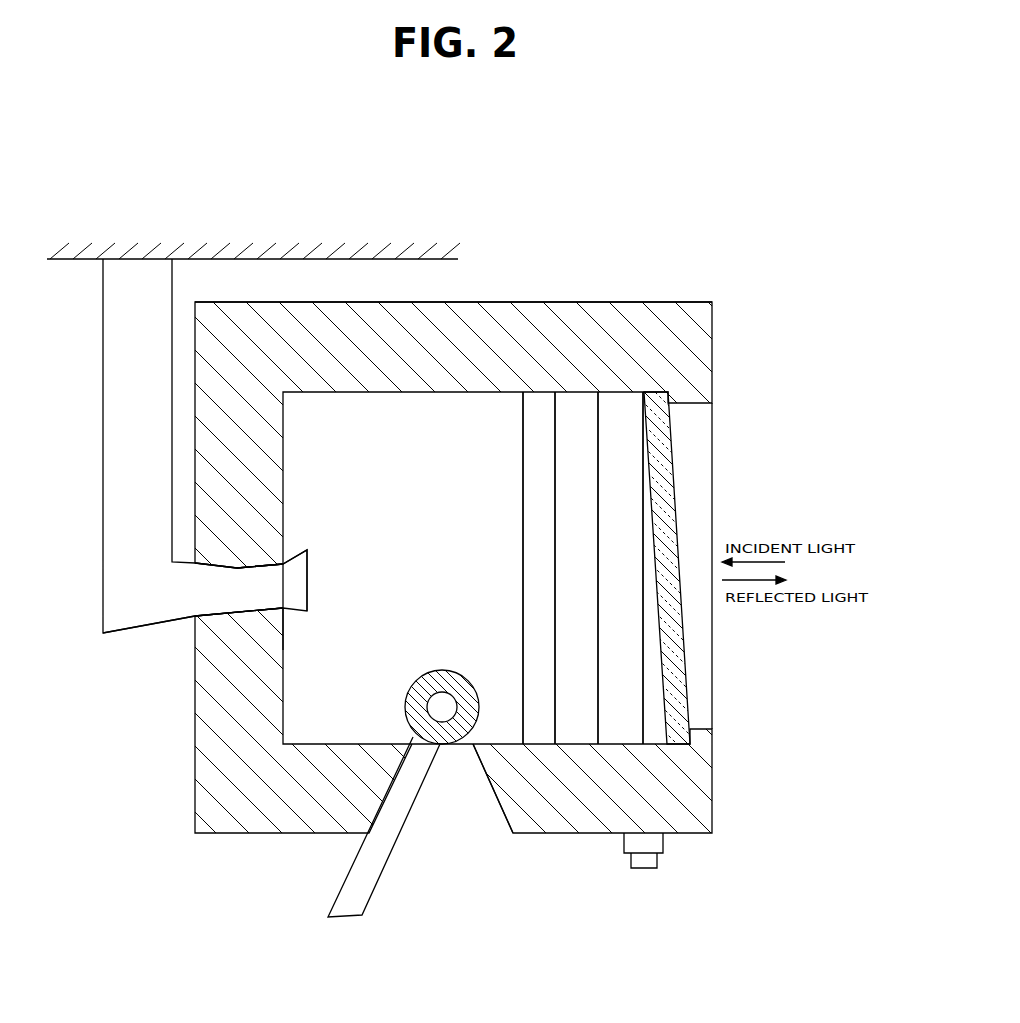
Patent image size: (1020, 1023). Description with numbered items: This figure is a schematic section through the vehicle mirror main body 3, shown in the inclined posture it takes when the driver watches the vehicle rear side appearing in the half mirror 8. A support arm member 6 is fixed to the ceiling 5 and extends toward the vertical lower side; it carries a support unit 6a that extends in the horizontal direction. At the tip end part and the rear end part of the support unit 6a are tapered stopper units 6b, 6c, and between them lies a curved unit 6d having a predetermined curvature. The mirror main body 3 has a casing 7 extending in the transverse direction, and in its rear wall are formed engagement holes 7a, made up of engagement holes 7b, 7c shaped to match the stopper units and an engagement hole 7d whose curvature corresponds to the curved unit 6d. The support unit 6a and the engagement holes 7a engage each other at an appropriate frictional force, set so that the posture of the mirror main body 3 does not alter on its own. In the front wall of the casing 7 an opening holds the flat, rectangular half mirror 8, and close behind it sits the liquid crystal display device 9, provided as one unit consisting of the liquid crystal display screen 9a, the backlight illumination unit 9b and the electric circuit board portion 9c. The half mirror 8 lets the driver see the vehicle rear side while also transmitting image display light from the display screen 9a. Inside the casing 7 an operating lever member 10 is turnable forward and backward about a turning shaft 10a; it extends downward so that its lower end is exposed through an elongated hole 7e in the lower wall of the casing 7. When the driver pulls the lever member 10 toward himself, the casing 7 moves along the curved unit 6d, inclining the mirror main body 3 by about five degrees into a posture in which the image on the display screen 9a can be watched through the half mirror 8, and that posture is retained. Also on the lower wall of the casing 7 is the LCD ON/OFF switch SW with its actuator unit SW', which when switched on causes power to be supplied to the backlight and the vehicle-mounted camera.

The vehicle mirror main body 3 is at (491, 294).
The ceiling 5 is at (241, 237).
The support arm member 6 is at (126, 391).
The support unit 6a is at (236, 566).
The stopper unit 6b is at (185, 615).
The stopper unit 6c is at (304, 549).
The curved unit 6d is at (240, 607).
The casing 7 is at (389, 366).
The engagement holes 7a is at (270, 563).
The engagement hole 7b is at (207, 610).
The engagement hole 7c is at (288, 612).
The engagement hole 7d is at (230, 570).
The elongated hole 7e is at (492, 826).
The half mirror 8 is at (665, 530).
The liquid crystal display device 9 is at (638, 246).
The liquid crystal display screen 9a is at (622, 408).
The backlight illumination unit 9b is at (580, 410).
The electric circuit board portion 9c is at (533, 408).
The operating lever member 10 is at (401, 788).
The turning shaft 10a is at (443, 705).
The LCD ON/OFF switch SW is at (611, 858).
The actuator unit SW' is at (648, 888).